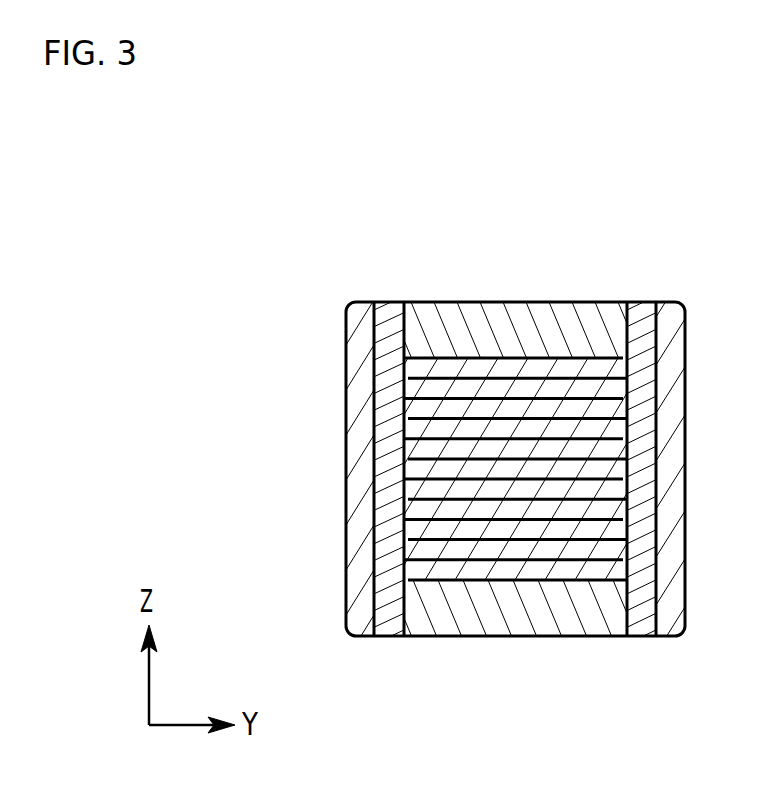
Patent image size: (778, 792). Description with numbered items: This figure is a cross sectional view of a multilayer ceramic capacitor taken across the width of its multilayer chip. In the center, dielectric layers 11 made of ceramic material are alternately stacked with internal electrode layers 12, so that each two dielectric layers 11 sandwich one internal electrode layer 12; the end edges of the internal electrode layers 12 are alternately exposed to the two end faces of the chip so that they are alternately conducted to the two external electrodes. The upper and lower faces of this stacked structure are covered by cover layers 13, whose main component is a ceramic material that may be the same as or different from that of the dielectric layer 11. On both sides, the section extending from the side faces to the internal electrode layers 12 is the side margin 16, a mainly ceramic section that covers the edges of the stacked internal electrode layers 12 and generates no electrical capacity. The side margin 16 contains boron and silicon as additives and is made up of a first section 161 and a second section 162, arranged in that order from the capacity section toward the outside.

The dielectric layer 11 is at (580, 553).
The internal electrode layer 12 is at (470, 520).
The cover layer 13 is at (500, 318).
The side margin 16 is at (513, 410).
The first section 161 is at (400, 308).
The second section 162 is at (362, 308).